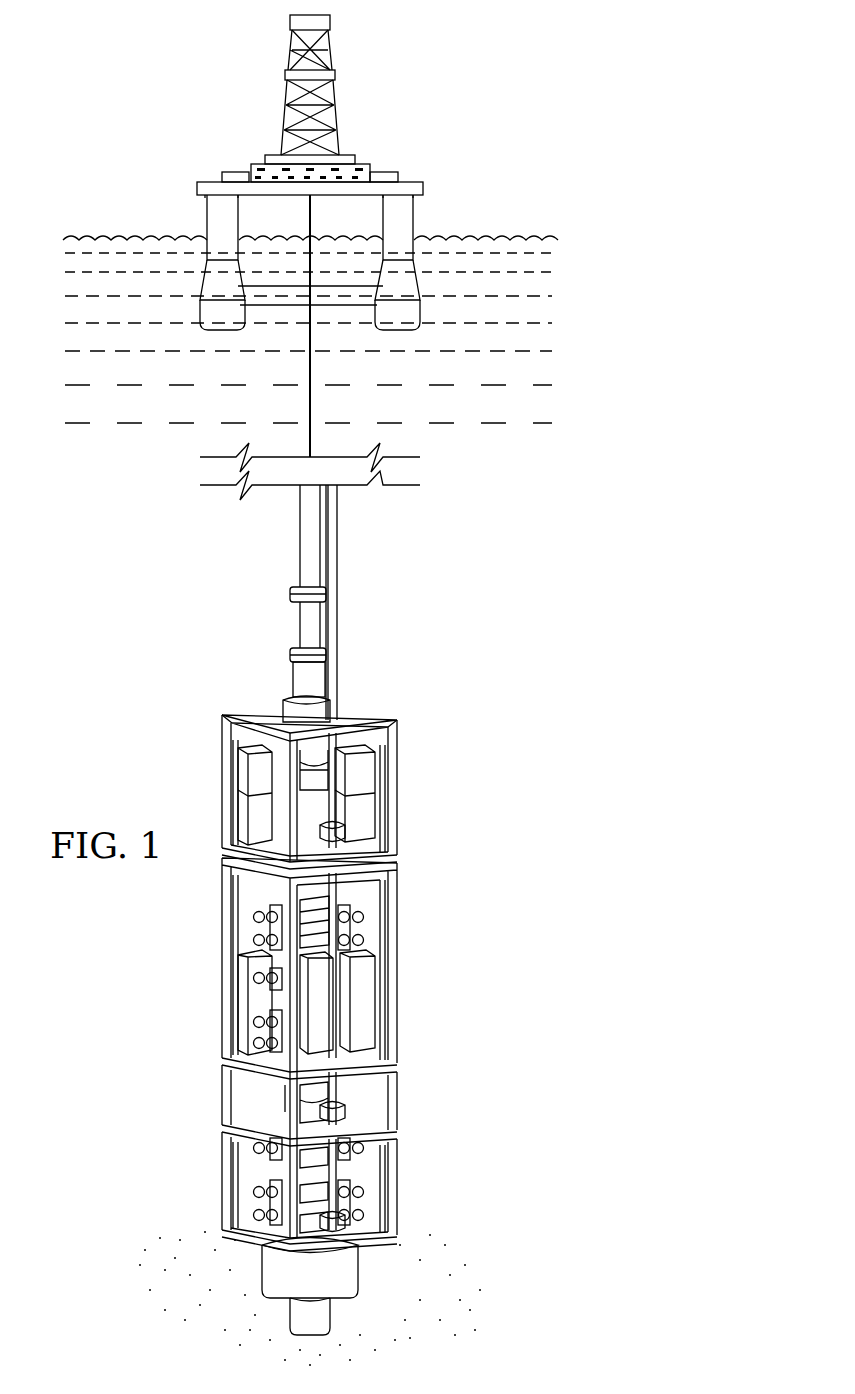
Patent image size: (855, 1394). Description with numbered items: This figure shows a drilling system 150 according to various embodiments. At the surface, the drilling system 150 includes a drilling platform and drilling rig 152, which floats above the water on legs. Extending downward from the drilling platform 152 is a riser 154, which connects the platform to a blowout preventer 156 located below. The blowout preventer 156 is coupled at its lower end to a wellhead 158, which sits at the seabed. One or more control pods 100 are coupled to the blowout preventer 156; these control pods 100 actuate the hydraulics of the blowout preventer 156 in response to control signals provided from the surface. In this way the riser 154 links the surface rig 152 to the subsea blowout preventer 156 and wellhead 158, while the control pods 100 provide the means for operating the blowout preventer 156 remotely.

The drilling system 150 is at (116, 92).
The drilling platform and drilling rig 152 is at (348, 160).
The riser 154 is at (300, 556).
The control pod 100 is at (378, 770).
The blowout preventer 156 is at (397, 960).
The wellhead 158 is at (358, 1265).